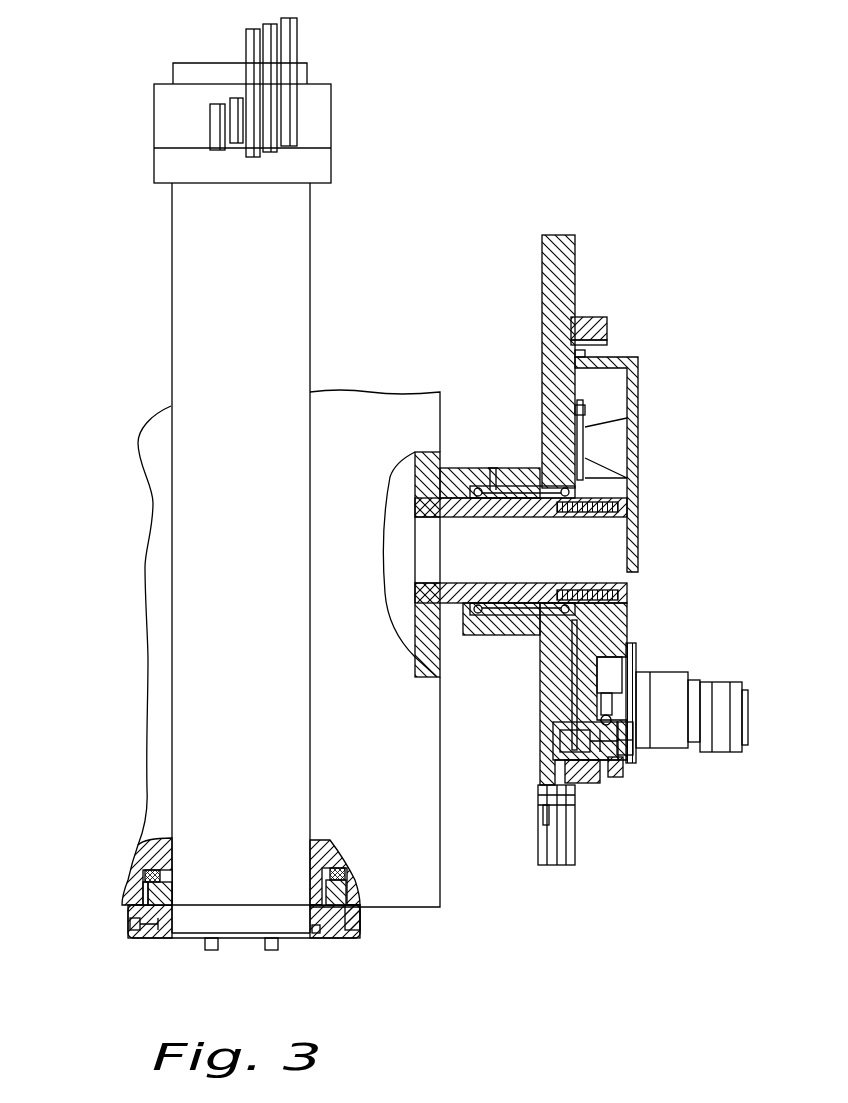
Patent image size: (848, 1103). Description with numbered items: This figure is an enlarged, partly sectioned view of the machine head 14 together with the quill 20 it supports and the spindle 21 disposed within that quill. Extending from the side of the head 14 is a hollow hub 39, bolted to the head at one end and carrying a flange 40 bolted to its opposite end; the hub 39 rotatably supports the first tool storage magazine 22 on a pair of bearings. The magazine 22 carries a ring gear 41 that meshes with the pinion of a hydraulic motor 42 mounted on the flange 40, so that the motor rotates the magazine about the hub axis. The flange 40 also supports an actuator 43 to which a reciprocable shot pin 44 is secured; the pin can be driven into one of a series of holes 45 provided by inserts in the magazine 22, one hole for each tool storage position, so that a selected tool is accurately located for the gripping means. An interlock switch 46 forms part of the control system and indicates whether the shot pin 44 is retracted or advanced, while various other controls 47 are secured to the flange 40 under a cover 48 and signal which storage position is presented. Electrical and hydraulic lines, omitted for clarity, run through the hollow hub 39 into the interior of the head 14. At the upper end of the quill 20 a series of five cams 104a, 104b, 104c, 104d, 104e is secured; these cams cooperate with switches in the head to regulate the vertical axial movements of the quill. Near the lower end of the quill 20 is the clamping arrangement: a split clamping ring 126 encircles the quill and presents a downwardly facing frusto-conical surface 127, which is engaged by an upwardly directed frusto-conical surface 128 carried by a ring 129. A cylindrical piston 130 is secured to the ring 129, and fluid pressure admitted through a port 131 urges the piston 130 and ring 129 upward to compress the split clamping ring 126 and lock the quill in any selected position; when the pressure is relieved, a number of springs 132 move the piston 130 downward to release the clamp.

The head 14 is at (394, 751).
The quill 20 is at (254, 716).
The spindle 21 is at (283, 945).
The first tool storage magazine 22 is at (551, 383).
The hollow hub 39 is at (510, 507).
The flange 40 is at (612, 622).
The ring gear 41 is at (607, 322).
The hydraulic motor 42 is at (668, 692).
The actuator 43 is at (645, 752).
The shot pin 44 is at (605, 783).
The holes 45 is at (563, 720).
The interlock switch 46 is at (607, 682).
The controls 47 is at (619, 446).
The cover 48 is at (638, 395).
The cam 104a is at (286, 47).
The cam 104b is at (293, 23).
The cam 104c is at (250, 35).
The cam 104d is at (237, 100).
The cam 104e is at (213, 118).
The split clamping ring 126 is at (312, 890).
The downwardly facing frusto-conical surface 127 is at (347, 888).
The upwardly directed frusto-conical surface 128 is at (165, 892).
The ring 129 is at (146, 893).
The cylindrical piston 130 is at (347, 915).
The port 131 is at (130, 925).
The springs 132 is at (143, 875).